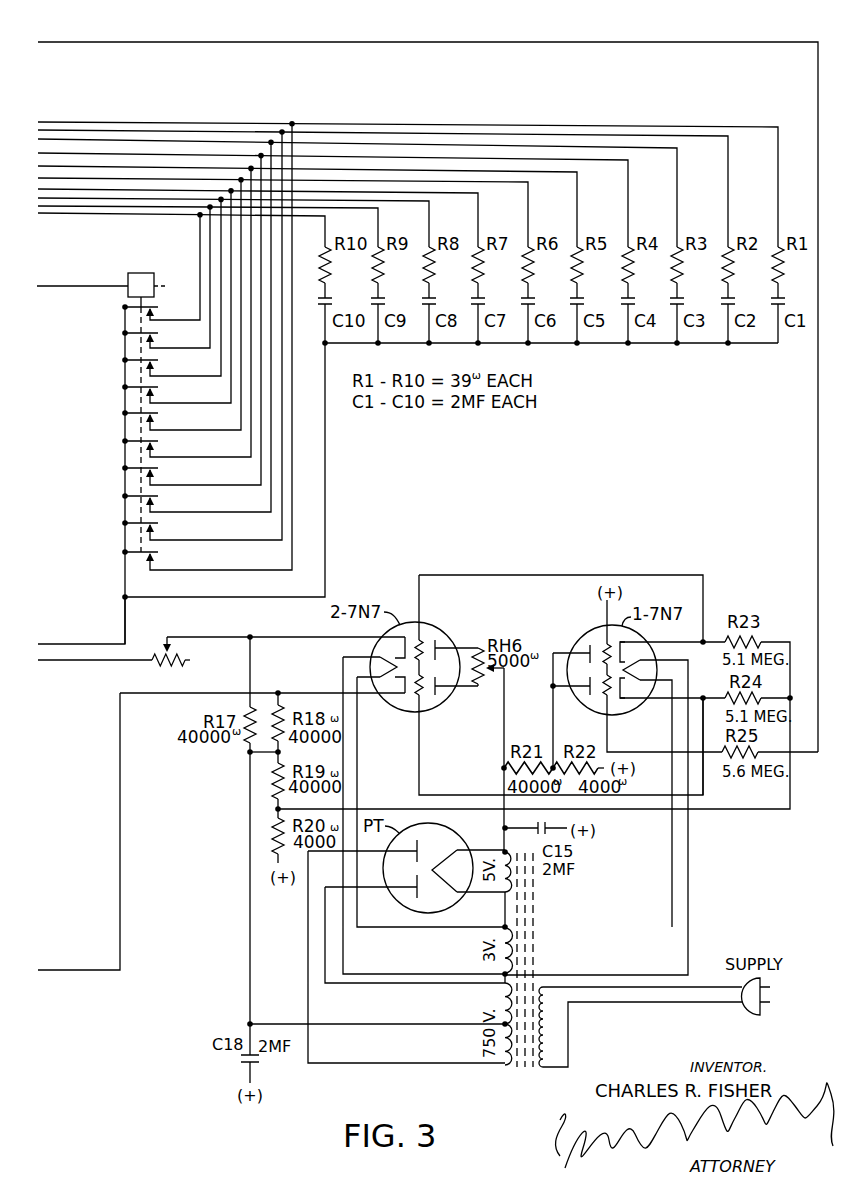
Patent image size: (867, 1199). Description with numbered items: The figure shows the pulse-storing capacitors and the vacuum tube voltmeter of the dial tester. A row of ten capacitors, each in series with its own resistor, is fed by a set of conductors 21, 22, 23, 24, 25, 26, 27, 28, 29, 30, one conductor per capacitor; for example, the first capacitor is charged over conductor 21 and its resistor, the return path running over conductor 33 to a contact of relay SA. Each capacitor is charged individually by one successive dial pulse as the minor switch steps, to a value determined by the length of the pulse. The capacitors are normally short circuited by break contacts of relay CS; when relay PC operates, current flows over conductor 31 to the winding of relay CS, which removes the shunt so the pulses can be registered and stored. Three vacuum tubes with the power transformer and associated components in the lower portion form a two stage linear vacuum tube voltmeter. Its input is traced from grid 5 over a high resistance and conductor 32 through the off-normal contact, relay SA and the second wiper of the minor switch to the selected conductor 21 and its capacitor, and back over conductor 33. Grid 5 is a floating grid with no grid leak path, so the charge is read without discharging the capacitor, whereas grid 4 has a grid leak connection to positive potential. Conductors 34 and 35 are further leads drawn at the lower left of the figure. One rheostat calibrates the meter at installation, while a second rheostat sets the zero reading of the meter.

The grid 4 is at (602, 646).
The control grid 5 is at (605, 695).
The conductor 21 is at (50, 122).
The conductor 22 is at (80, 129).
The conductor 23 is at (117, 139).
The conductor 24 is at (50, 153).
The conductor 25 is at (80, 165).
The conductor 26 is at (117, 178).
The conductor 27 is at (45, 190).
The conductor 28 is at (80, 198).
The conductor 29 is at (120, 206).
The conductor 30 is at (163, 215).
The conductor 31 is at (47, 285).
The conductor 32 is at (50, 42).
The conductor 33 is at (40, 645).
The conductor 34 is at (40, 660).
The conductor 35 is at (48, 960).